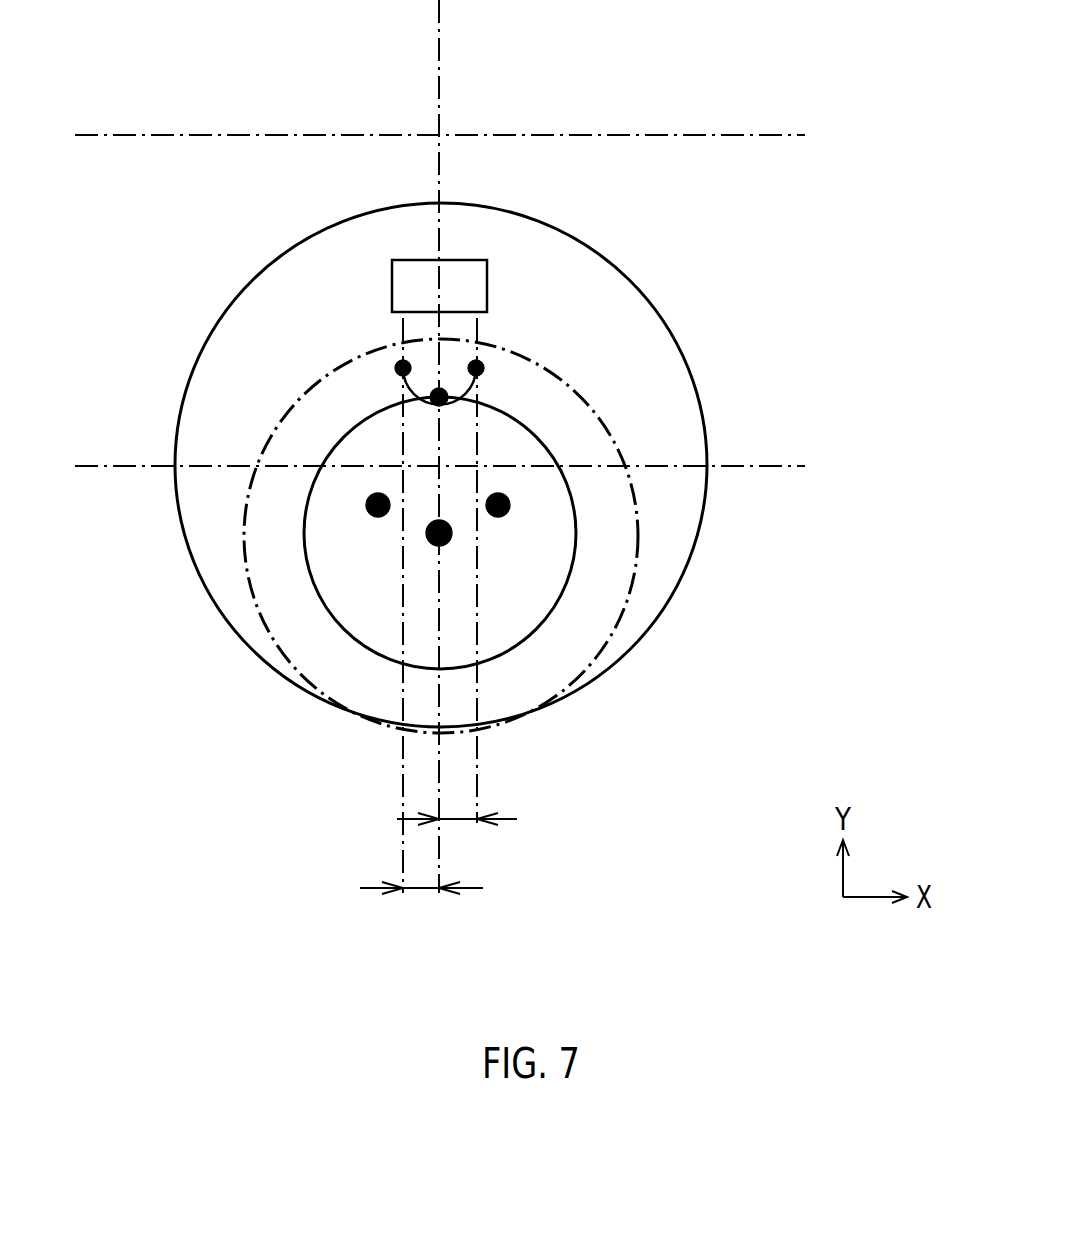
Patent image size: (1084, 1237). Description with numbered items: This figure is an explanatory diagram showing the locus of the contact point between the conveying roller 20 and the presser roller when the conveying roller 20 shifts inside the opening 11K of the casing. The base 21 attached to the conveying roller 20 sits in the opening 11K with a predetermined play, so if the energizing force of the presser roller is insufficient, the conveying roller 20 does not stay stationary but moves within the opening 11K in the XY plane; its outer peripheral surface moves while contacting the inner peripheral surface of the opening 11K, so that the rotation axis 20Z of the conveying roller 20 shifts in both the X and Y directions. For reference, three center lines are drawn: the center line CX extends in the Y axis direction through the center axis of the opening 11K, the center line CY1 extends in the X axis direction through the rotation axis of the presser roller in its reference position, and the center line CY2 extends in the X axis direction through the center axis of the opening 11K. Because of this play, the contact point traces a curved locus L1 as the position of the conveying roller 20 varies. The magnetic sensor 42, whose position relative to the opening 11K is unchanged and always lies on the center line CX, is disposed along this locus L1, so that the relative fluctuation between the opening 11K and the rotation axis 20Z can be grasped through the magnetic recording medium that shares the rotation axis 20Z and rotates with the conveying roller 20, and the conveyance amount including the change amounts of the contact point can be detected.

The center line CX is at (441, 37).
The center line CY1 is at (771, 137).
The center line CY2 is at (771, 468).
The opening 11K is at (683, 376).
The magnetic sensor 42 is at (487, 283).
The base 21 is at (537, 682).
The conveying roller 20 is at (550, 555).
The rotation axis 20Z is at (439, 533).
The locus L1 is at (440, 397).